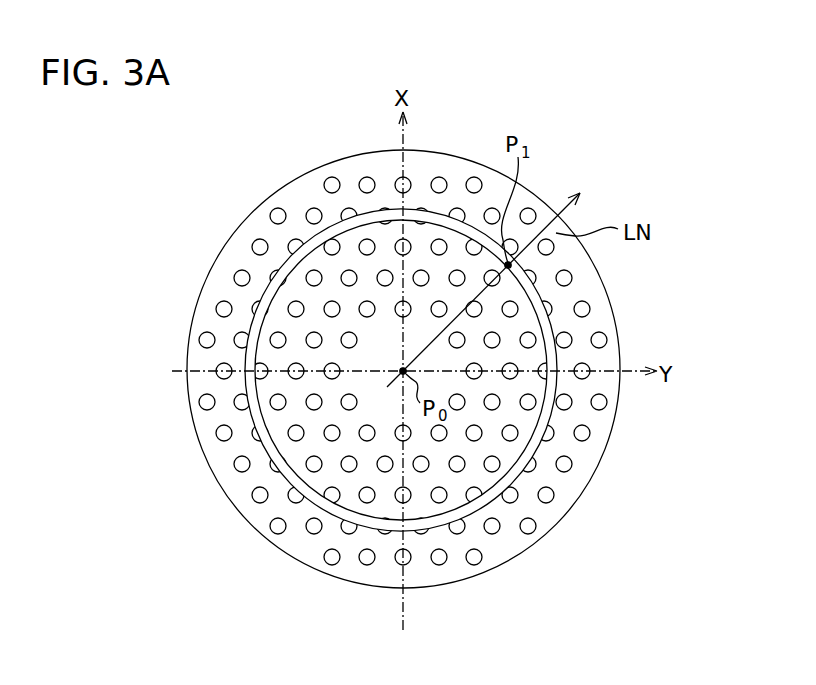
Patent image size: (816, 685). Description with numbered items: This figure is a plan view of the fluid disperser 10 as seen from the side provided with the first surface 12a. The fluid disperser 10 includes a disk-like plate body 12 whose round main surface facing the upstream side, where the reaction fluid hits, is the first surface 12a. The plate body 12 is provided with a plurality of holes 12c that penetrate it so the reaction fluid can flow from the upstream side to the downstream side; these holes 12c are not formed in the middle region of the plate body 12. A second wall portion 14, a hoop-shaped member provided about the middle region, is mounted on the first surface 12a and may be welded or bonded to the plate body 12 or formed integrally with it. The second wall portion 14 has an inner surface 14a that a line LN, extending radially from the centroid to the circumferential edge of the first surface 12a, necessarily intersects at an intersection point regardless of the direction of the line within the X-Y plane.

The fluid disperser 10 is at (207, 183).
The plate body 12 is at (220, 253).
The first surface 12a is at (214, 320).
The holes 12c is at (272, 532).
The second wall portion 14 is at (257, 422).
The inner surface 14a is at (534, 316).